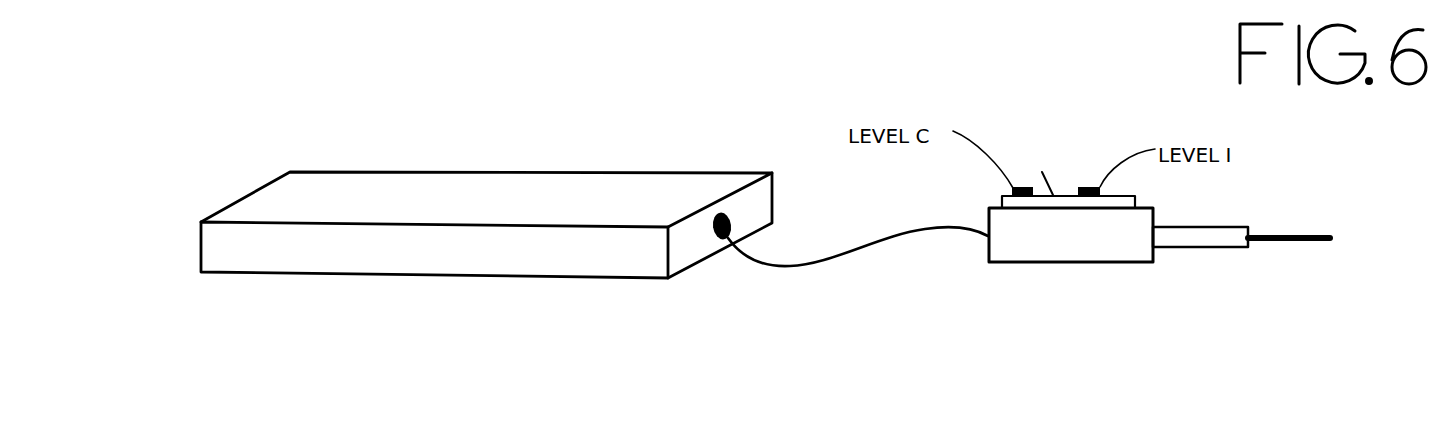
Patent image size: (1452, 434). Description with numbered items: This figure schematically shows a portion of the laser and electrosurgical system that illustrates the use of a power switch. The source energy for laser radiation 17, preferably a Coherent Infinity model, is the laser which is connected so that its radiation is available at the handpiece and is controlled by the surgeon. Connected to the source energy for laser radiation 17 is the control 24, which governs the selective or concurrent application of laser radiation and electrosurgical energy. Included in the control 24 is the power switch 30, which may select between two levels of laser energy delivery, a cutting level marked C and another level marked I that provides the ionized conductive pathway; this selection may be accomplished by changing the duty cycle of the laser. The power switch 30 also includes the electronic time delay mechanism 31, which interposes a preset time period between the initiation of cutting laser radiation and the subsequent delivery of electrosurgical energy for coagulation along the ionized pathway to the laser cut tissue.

The source energy for laser radiation 17 is at (468, 172).
The control 24 is at (1137, 199).
The power switch 30 is at (1053, 195).
The electronic time delay mechanism 31 is at (1002, 200).